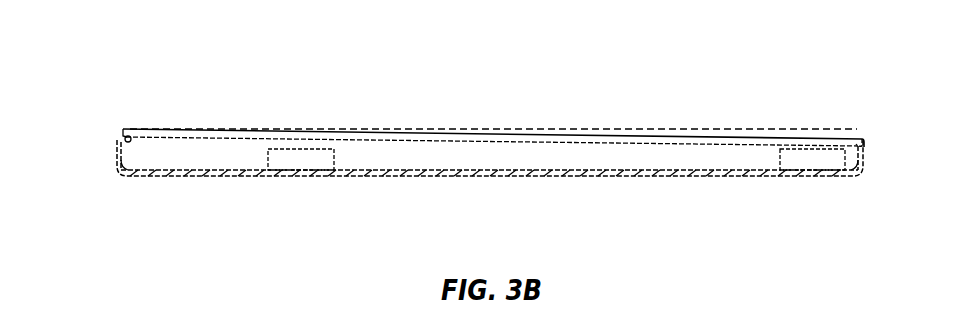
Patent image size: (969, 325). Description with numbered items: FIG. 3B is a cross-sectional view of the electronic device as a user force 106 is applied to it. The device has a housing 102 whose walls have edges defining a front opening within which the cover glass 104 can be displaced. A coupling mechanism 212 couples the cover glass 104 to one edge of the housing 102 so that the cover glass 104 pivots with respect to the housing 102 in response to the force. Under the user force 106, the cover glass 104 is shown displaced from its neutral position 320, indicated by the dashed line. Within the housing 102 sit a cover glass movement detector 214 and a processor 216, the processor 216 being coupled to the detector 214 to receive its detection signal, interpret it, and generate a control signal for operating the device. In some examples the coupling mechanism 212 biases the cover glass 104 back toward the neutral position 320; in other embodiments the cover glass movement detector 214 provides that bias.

The housing 102 is at (118, 172).
The cover glass 104 is at (280, 136).
The user force 106 is at (815, 128).
The coupling mechanism 212 is at (125, 136).
The cover glass movement detector 214 is at (808, 160).
The processor 216 is at (300, 165).
The neutral position 320 is at (567, 128).